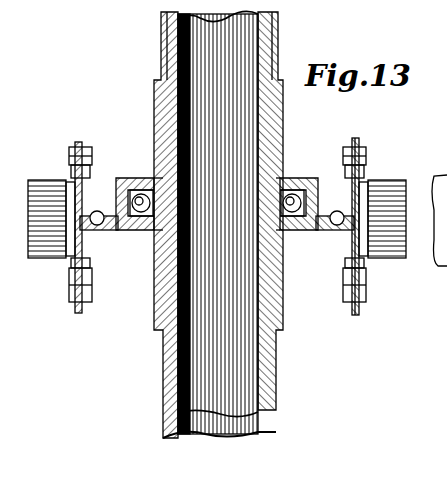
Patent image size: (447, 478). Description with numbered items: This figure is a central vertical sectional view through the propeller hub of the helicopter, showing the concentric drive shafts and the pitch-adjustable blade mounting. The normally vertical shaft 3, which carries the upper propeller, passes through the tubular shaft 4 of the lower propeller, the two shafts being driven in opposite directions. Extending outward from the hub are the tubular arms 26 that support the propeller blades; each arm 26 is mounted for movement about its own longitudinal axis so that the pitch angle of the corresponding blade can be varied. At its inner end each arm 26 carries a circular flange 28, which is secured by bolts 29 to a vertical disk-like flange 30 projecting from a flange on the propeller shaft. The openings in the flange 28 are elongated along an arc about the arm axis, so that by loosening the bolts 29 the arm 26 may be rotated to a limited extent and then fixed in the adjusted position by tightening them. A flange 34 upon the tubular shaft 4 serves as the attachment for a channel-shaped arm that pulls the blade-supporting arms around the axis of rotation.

The normally vertical shaft 3 is at (160, 330).
The tubular shaft 4 is at (163, 385).
The tubular arm 26 is at (40, 268).
The circular flange 28 is at (78, 143).
The bolts 29 is at (92, 300).
The vertical disk-like flange 30 is at (353, 138).
The flange 34 is at (322, 232).